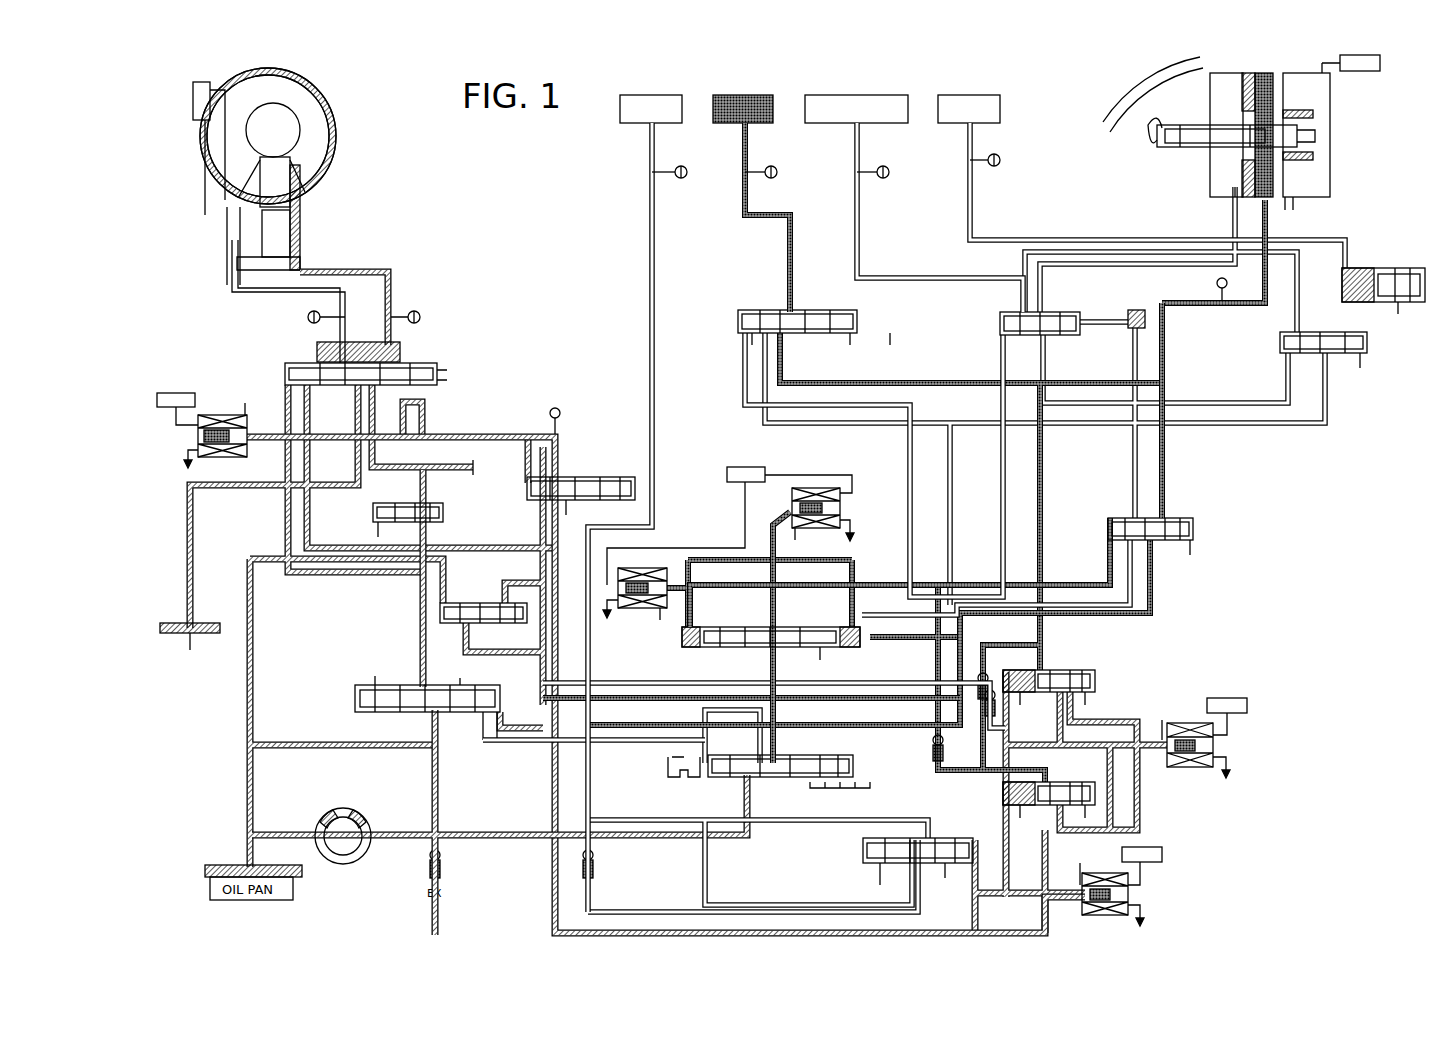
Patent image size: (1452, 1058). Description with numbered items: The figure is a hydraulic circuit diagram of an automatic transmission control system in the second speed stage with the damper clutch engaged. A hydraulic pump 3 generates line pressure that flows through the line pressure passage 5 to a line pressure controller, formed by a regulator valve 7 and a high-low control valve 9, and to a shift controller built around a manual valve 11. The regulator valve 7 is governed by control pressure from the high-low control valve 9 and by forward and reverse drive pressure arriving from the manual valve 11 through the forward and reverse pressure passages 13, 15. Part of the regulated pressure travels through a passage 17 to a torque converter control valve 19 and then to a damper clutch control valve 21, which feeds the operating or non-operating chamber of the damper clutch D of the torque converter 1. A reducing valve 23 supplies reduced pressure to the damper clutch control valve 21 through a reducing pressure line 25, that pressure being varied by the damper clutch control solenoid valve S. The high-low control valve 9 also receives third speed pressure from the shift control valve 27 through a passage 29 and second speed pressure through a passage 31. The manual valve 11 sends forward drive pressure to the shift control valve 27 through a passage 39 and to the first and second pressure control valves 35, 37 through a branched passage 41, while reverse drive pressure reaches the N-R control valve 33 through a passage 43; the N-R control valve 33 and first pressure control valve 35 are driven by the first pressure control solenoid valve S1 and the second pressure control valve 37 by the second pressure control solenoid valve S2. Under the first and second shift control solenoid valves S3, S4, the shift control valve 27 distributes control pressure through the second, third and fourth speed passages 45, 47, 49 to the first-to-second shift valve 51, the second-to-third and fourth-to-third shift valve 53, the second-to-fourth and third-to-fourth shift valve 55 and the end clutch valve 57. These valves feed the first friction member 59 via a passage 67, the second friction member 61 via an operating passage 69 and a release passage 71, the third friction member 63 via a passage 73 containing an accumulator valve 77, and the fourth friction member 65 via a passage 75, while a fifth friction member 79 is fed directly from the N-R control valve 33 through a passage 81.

The torque converter 1 is at (355, 139).
The damper clutch D is at (224, 86).
The hydraulic pump 3 is at (343, 866).
The line pressure passage 5 is at (490, 833).
The regulator valve 7 is at (355, 700).
The high-low control valve 9 is at (472, 604).
The manual valve 11 is at (667, 776).
The forward pressure passage 13 is at (610, 742).
The reverse pressure passage 15 is at (645, 728).
The passage 17 is at (420, 637).
The torque converter control valve 19 is at (446, 516).
The damper clutch control valve 21 is at (448, 356).
The reducing valve 23 is at (602, 470).
The reducing pressure line 25 is at (487, 434).
The shift control valve 27 is at (682, 636).
The passage 29 is at (612, 682).
The passage 31 is at (683, 697).
The N-R control valve 33 is at (862, 852).
The first pressure control valve 35 is at (1002, 793).
The second pressure control valve 37 is at (1098, 683).
The passage 39 is at (770, 670).
The passage 41 is at (898, 728).
The passage 43 is at (752, 905).
The second speed passage 45 is at (955, 583).
The third speed passage 47 is at (878, 596).
The fourth speed passage 49 is at (895, 618).
The 1-2 shift valve 51 is at (1197, 531).
The 2-3/4-3 shift valve 53 is at (998, 324).
The 2-4/3-4 shift valve 55 is at (737, 324).
The end clutch valve 57 is at (1278, 345).
The first friction member 59 is at (743, 95).
The second friction member 61 is at (1206, 166).
The third friction member 63 is at (970, 95).
The fourth friction member 65 is at (857, 95).
The passage 67 is at (788, 262).
The passage 69 is at (1168, 460).
The passage 71 is at (1175, 266).
The passage 73 is at (1075, 238).
The passage 75 is at (912, 277).
The accumulator valve 77 is at (1385, 268).
The fifth friction member 79 is at (652, 95).
The passage 81 is at (657, 238).
The damper clutch control solenoid valve S is at (222, 413).
The first pressure control solenoid valve S1 is at (1135, 894).
The second pressure control solenoid valve S2 is at (1220, 746).
The first shift control solenoid valve S3 is at (820, 482).
The second shift control solenoid valve S4 is at (660, 568).